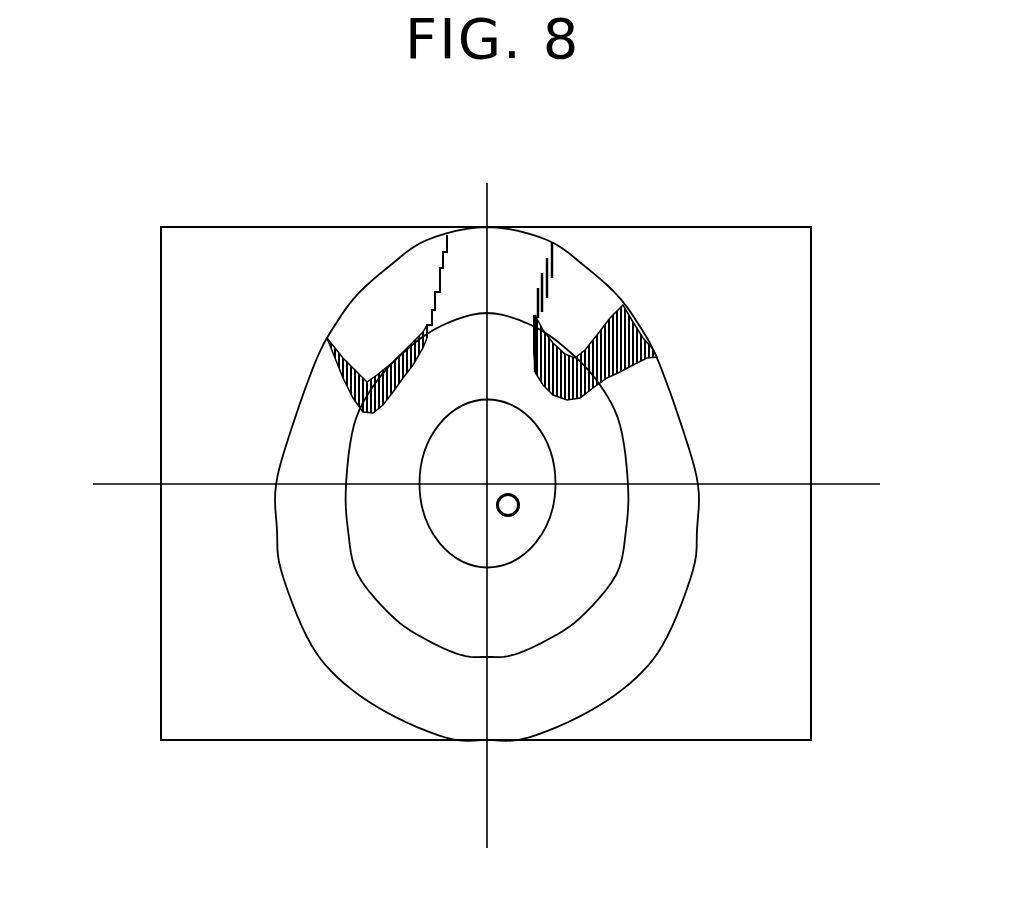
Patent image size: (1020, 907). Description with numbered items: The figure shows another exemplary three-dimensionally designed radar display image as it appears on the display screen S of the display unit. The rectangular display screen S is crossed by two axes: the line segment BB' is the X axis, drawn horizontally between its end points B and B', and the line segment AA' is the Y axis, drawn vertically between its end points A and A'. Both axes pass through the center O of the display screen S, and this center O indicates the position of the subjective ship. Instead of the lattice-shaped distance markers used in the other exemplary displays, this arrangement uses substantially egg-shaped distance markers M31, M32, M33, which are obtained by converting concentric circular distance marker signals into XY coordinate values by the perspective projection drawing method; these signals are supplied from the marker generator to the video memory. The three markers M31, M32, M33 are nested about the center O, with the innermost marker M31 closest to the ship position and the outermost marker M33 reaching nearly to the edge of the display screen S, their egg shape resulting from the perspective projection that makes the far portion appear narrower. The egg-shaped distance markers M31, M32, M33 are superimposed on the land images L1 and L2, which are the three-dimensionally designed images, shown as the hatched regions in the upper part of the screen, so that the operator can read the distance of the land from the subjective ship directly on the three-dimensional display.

The display screen S is at (762, 258).
The Y axis end point A is at (488, 312).
The Y axis end point A' is at (491, 690).
The X axis end point B is at (702, 489).
The X axis end point B' is at (264, 489).
The center of display screen O is at (508, 505).
The land image L1 is at (367, 382).
The land image L2 is at (558, 355).
The egg-shaped distance marker M31 is at (542, 538).
The egg-shaped distance marker M32 is at (583, 612).
The egg-shaped distance marker M33 is at (635, 677).